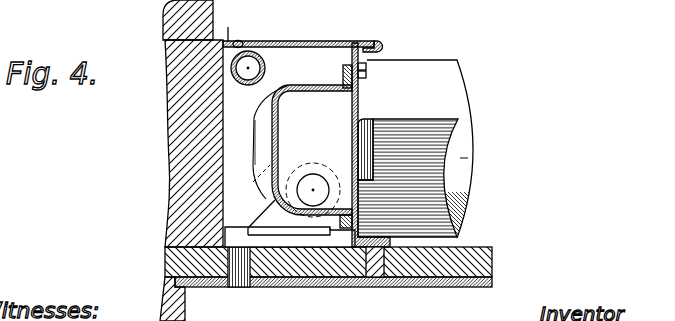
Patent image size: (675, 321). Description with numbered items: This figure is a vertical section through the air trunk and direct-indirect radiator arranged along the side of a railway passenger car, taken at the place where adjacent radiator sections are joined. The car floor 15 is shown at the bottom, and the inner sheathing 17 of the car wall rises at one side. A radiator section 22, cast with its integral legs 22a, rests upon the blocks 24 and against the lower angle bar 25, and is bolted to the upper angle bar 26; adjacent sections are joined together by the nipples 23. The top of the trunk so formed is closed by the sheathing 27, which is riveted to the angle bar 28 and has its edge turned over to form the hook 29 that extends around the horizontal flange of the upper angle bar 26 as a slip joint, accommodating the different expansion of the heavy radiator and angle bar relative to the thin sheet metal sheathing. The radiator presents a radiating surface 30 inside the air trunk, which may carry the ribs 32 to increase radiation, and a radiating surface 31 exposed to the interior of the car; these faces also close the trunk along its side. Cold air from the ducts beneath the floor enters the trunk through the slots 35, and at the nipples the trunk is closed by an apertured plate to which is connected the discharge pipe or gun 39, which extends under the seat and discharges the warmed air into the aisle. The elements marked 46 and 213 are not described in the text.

The floor 15 is at (452, 267).
The inner sheathing 17 is at (176, 89).
The radiator section 22 is at (312, 85).
The integral legs 22a is at (243, 211).
The nipples 23 is at (370, 137).
The blocks 24 is at (343, 238).
The lower angle bar 25 is at (377, 247).
The upper angle bar 26 is at (366, 58).
The sheathing 27 is at (294, 41).
The angle bar 28 is at (232, 29).
The hook 29 is at (386, 47).
The radiating surface 30 is at (268, 122).
The radiating surface 31 is at (358, 118).
The ribs 32 is at (263, 132).
The slots 35 is at (248, 267).
The discharge pipes or guns 39 is at (457, 72).
The ring 46 is at (255, 53).
The pivot pin 213 is at (240, 151).